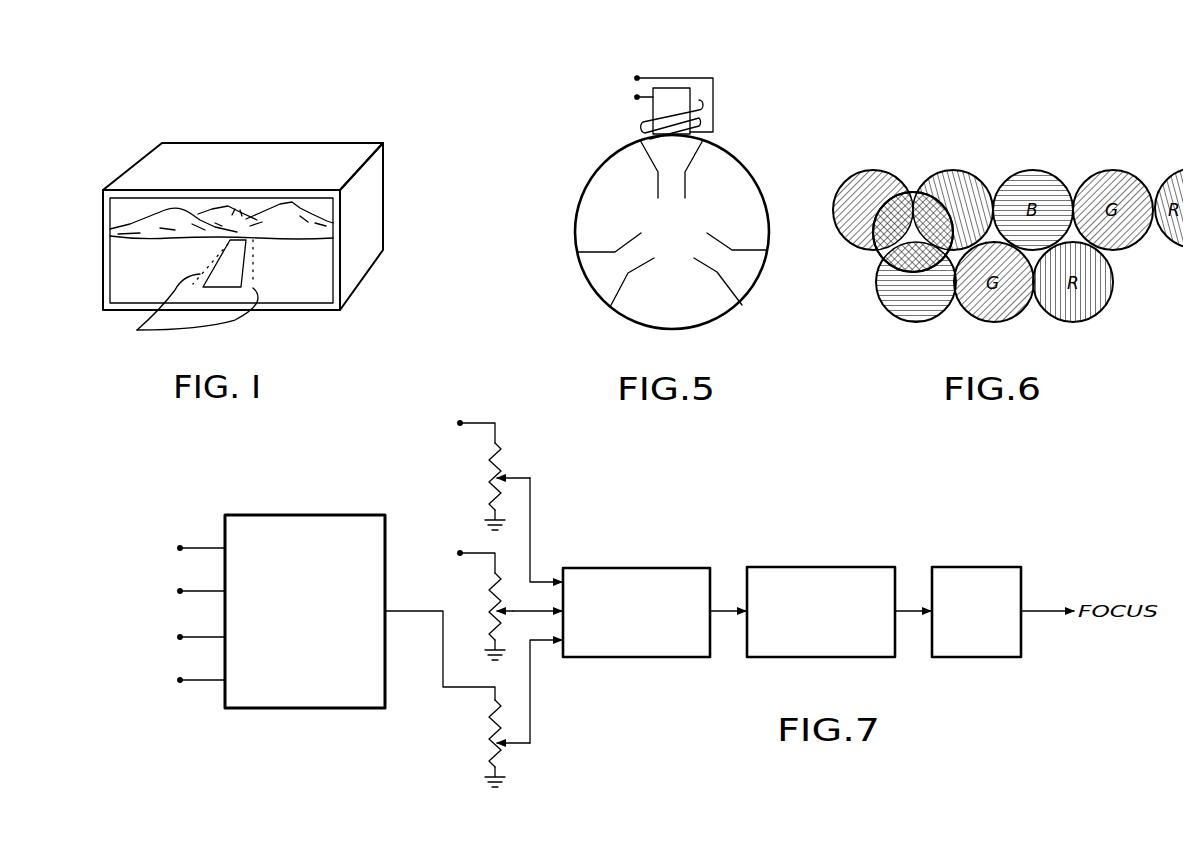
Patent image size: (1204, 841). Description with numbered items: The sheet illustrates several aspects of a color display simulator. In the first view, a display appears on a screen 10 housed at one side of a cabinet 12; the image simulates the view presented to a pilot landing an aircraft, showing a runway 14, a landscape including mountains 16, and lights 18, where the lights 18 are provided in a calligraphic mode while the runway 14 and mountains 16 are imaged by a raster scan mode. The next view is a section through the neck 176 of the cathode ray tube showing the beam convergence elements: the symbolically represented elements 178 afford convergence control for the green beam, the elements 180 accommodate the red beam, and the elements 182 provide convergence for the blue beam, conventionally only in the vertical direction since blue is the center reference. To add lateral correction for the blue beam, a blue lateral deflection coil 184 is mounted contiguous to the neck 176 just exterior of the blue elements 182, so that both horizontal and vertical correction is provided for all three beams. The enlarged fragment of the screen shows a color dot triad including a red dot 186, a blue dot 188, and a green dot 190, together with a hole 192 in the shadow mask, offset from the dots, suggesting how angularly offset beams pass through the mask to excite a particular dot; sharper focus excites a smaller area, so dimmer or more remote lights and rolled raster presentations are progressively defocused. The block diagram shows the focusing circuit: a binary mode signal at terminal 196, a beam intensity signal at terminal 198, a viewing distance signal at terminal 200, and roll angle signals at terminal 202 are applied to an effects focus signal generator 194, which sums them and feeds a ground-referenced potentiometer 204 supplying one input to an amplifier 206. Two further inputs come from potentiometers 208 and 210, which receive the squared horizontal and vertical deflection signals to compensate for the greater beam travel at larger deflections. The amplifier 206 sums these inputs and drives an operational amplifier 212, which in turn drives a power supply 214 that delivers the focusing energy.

In FIG. 1, the screen 10 is at (326, 294).
In FIG. 1, the cabinet 12 is at (378, 192).
In FIG. 1, the runway 14 is at (235, 273).
In FIG. 1, the mountains 16 is at (194, 212).
In FIG. 1, the lights 18 is at (179, 309).
In FIG. 5, the neck 176 is at (580, 193).
In FIG. 5, the green beam convergence elements 178 is at (597, 277).
In FIG. 5, the red beam convergence elements 180 is at (745, 284).
In FIG. 5, the blue beam convergence elements 182 is at (686, 168).
In FIG. 5, the blue lateral deflection coil 184 is at (717, 111).
In FIG. 6, the red dot 186 is at (955, 170).
In FIG. 6, the blue dot 188 is at (898, 312).
In FIG. 6, the green dot 190 is at (866, 172).
In FIG. 6, the hole 192 is at (880, 250).
In FIG. 7, the effects focus signal generator 194 is at (300, 515).
In FIG. 7, the terminal 196 is at (178, 594).
In FIG. 7, the terminal 198 is at (181, 545).
In FIG. 7, the terminal 200 is at (179, 640).
In FIG. 7, the terminal 202 is at (179, 684).
In FIG. 7, the potentiometer 204 is at (490, 745).
In FIG. 7, the amplifier 206 is at (631, 658).
In FIG. 7, the potentiometer 208 is at (505, 471).
In FIG. 7, the potentiometer 210 is at (490, 610).
In FIG. 7, the operational amplifier 212 is at (796, 567).
In FIG. 7, the power supply 214 is at (976, 567).